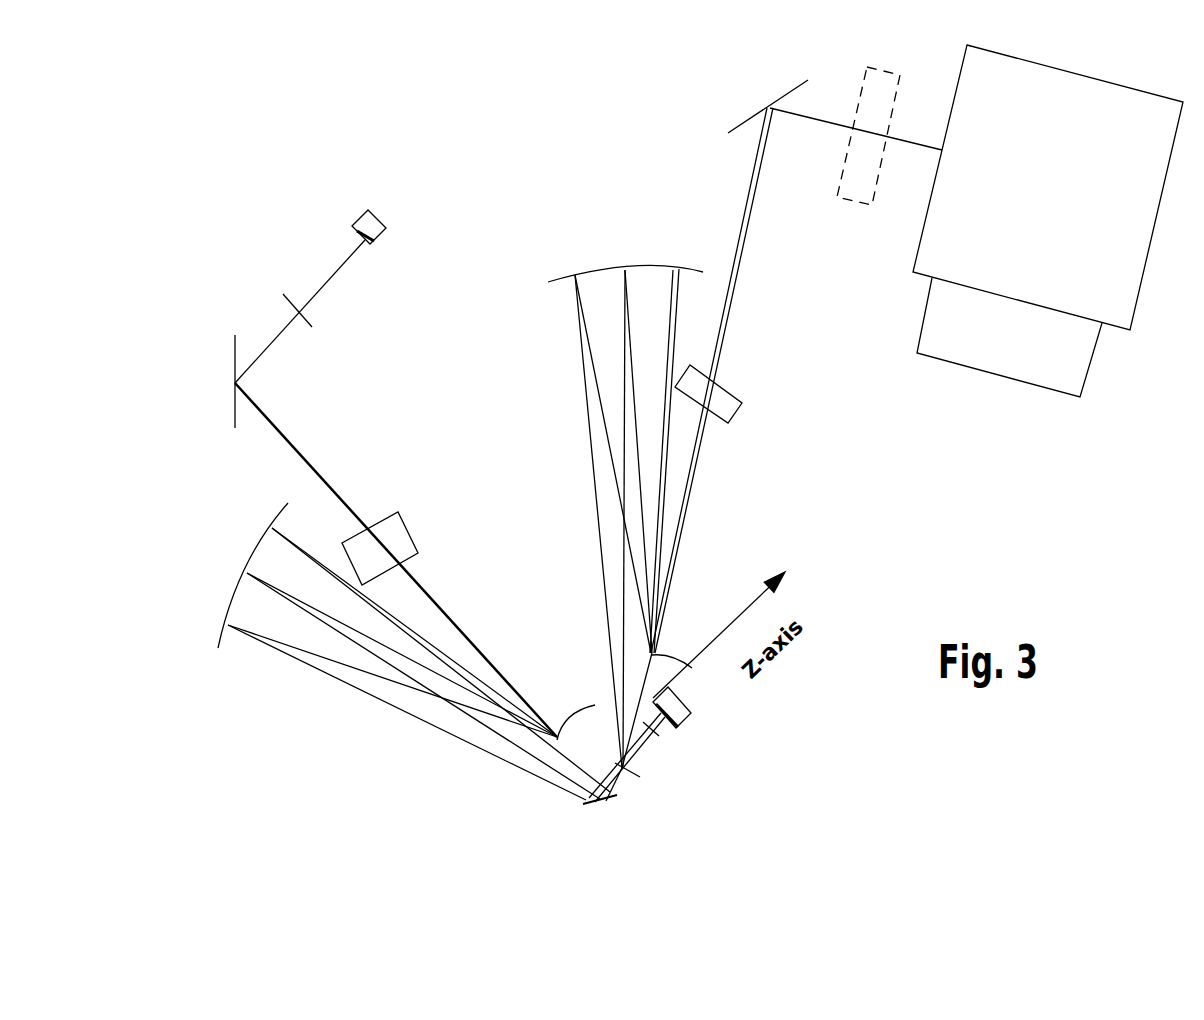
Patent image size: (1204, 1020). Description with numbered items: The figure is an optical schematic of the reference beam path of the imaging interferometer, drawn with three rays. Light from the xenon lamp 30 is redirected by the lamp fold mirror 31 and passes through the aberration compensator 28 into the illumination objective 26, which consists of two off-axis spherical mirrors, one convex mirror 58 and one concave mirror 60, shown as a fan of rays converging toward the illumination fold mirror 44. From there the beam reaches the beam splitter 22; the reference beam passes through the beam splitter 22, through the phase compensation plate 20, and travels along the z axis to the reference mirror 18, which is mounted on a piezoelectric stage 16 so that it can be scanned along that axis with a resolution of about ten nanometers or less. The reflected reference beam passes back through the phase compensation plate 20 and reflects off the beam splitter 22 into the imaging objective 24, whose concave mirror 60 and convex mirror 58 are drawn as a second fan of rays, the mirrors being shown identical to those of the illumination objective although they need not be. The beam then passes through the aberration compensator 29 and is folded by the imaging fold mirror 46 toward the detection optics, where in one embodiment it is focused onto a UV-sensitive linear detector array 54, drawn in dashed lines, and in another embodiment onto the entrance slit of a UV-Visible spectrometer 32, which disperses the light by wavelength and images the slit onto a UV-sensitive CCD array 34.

The piezoelectric stage 16 is at (714, 716).
The reference mirror 18 is at (691, 744).
The phase compensation plate 20 is at (668, 756).
The beam splitter 22 is at (645, 796).
The imaging objective 24 is at (716, 494).
The illumination objective 26 is at (361, 729).
The aberration compensator 28 is at (400, 536).
The aberration compensator 29 is at (727, 394).
The xenon lamp 30 is at (382, 211).
The lamp fold mirror 31 is at (366, 488).
The UV-Visible spectrometer 32 is at (1048, 187).
The UV-sensitive CCD array 34 is at (1009, 337).
The illumination fold mirror 44 is at (565, 822).
The imaging fold mirror 46 is at (826, 105).
The UV-sensitive linear detector array 54 is at (874, 117).
The convex mirror 58 is at (625, 684).
The concave mirror 60 is at (457, 507).